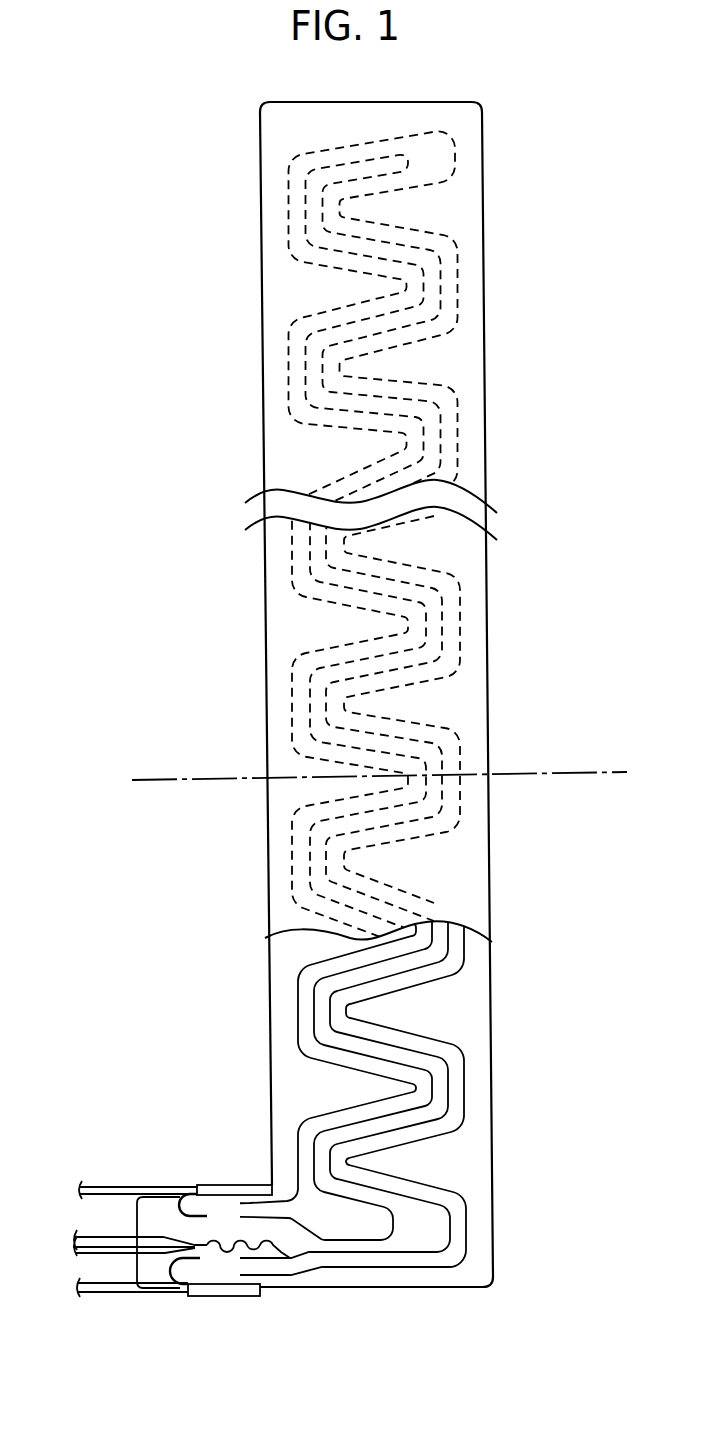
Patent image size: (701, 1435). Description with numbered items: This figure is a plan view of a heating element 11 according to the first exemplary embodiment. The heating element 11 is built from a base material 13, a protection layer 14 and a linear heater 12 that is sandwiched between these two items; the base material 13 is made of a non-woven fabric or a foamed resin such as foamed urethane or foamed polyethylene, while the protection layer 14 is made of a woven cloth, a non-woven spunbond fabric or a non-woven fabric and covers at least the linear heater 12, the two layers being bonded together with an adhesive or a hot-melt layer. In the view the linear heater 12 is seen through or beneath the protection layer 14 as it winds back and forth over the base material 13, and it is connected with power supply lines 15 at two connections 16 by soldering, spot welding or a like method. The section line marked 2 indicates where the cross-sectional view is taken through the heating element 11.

The heating element 11 is at (488, 343).
The linear heater 12 is at (470, 1060).
The base material 13 is at (470, 447).
The protection layer 14 is at (478, 892).
The power supply lines 15 is at (138, 1197).
The connections 16 is at (223, 1285).
The section line 2- 2 is at (647, 713).